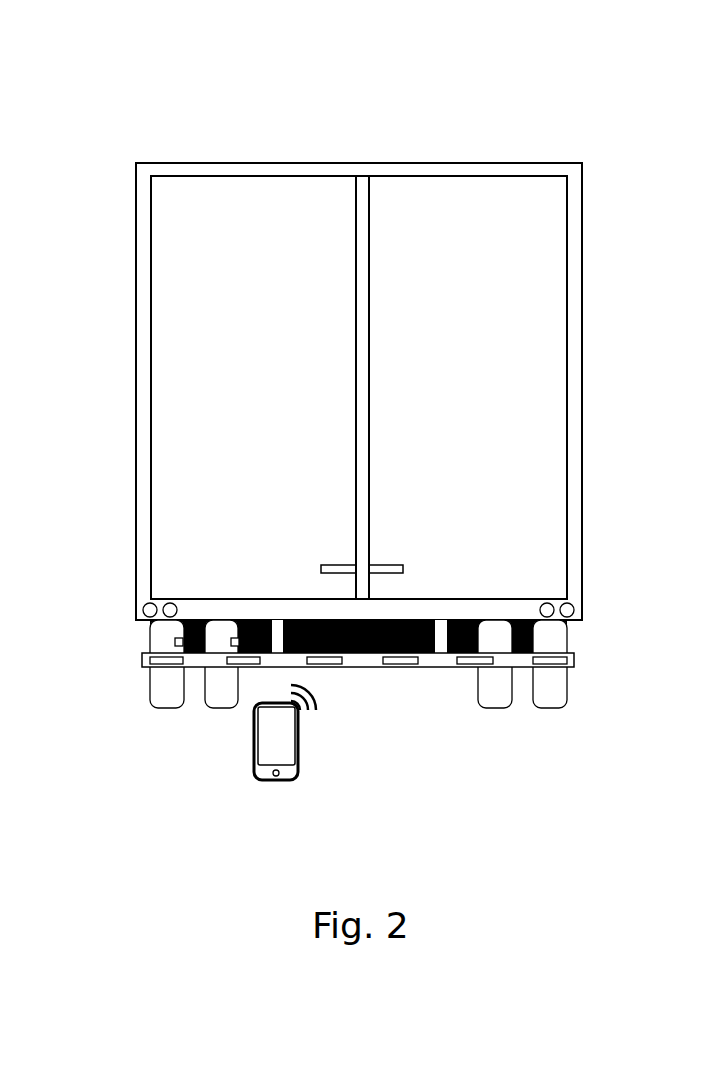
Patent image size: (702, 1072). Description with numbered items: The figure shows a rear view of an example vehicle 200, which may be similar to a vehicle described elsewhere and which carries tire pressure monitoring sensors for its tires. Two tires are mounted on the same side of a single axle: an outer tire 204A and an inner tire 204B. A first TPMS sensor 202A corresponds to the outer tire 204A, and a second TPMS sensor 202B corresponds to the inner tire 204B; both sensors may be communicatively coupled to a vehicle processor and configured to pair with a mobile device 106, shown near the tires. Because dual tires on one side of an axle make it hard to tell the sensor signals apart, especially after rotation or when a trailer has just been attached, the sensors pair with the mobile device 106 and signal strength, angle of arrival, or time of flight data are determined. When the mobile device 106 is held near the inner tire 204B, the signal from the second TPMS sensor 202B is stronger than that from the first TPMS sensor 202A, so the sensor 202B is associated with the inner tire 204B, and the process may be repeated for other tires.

The vehicle 200 is at (357, 162).
The outer tire 204A is at (181, 619).
The inner tire 204B is at (237, 619).
The first TPMS sensor 202A is at (175, 644).
The second TPMS sensor 202B is at (233, 647).
The mobile device 106 is at (298, 757).